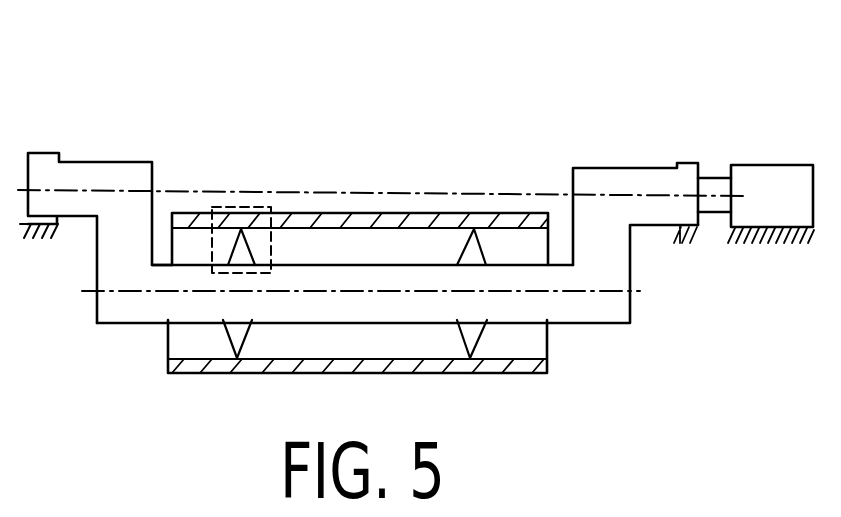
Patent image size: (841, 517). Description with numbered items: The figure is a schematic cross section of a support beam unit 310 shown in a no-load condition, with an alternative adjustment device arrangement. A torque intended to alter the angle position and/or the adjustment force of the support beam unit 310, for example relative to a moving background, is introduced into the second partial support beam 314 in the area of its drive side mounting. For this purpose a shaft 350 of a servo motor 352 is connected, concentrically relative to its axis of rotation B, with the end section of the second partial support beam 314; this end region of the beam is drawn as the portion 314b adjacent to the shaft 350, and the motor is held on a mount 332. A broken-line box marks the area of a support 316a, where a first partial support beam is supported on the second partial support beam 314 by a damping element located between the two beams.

The support beam unit 310 is at (150, 108).
The second partial support beam 314 is at (588, 338).
The housing end portion 314b is at (623, 183).
The support 316a is at (215, 247).
The axis of rotation B is at (352, 193).
The support mount 332 is at (676, 243).
The shaft 350 is at (717, 180).
The servo motor 352 is at (750, 187).